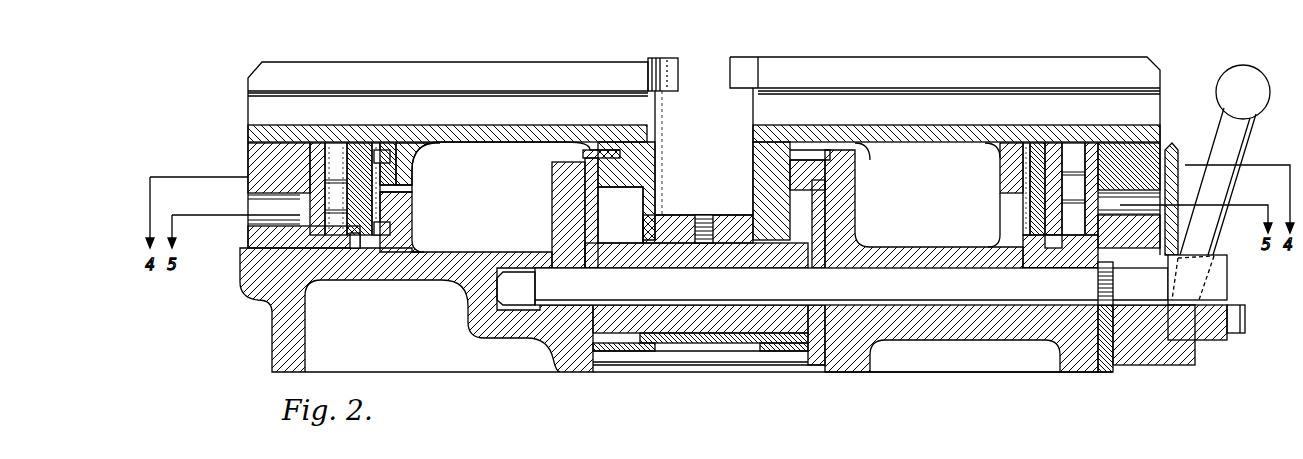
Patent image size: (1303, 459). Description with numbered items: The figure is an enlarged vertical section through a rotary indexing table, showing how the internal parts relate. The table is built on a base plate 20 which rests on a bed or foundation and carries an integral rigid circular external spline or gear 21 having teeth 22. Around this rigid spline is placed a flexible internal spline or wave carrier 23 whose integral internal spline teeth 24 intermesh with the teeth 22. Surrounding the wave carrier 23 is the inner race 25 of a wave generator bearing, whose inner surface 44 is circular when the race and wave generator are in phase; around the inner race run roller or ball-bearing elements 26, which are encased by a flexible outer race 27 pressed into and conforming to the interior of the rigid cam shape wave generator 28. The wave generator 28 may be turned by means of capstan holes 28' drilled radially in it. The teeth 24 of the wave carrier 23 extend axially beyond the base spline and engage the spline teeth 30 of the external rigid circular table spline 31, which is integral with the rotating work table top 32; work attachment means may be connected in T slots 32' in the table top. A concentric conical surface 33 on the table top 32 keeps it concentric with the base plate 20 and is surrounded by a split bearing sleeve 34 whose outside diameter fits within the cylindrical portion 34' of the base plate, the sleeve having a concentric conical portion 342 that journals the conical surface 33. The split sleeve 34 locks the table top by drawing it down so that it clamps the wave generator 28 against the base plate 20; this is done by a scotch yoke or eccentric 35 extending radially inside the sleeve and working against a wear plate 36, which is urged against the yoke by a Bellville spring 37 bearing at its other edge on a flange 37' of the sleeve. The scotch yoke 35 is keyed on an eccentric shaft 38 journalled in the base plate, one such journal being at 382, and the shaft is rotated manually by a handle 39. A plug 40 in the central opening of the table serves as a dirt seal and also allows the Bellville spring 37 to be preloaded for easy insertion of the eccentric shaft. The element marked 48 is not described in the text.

The base plate 20 is at (275, 346).
The work table top 32 is at (704, 142).
The T slots 32' is at (682, 63).
The spline teeth 30 is at (440, 136).
The cam shape wave generator 28 is at (258, 168).
The capstan holes 28' is at (252, 208).
The outer race 27 is at (255, 238).
The key 48 is at (357, 250).
The roller or ball-bearing elements 26 is at (326, 148).
The inner race 25 is at (358, 148).
The inner surface of the inner race 44 is at (376, 148).
The flexible internal spline or wave carrier 23 is at (392, 148).
The internal spline teeth 24 is at (415, 145).
The external rigid circular table spline 31 is at (416, 173).
The teeth 22 is at (413, 190).
The integral rigid circular external spline or gear 21 is at (412, 226).
The cylindrical portion 34' is at (543, 215).
The split bearing sleeve 34 is at (605, 209).
The concentric conical portion 342 is at (601, 150).
The concentric conical surface 33 is at (612, 188).
The plug 40 is at (680, 216).
The eccentric shaft 38 is at (781, 266).
The scotch yoke or eccentric 35 is at (717, 318).
The wear plate 36 is at (686, 340).
The Bellville spring 37 is at (700, 373).
The flange 37' is at (814, 352).
The journal in the base plate 382 is at (532, 262).
The handle 39 is at (1248, 76).